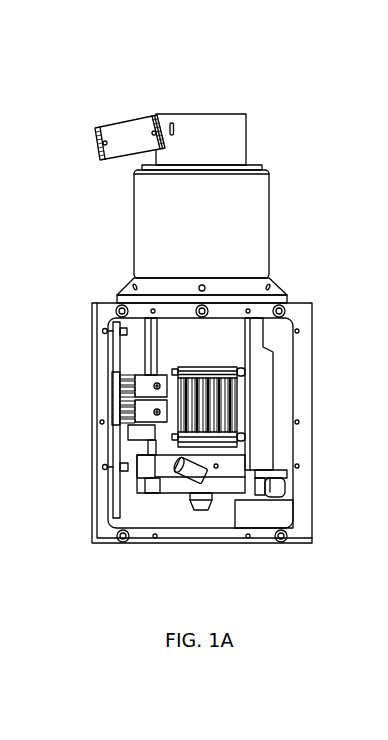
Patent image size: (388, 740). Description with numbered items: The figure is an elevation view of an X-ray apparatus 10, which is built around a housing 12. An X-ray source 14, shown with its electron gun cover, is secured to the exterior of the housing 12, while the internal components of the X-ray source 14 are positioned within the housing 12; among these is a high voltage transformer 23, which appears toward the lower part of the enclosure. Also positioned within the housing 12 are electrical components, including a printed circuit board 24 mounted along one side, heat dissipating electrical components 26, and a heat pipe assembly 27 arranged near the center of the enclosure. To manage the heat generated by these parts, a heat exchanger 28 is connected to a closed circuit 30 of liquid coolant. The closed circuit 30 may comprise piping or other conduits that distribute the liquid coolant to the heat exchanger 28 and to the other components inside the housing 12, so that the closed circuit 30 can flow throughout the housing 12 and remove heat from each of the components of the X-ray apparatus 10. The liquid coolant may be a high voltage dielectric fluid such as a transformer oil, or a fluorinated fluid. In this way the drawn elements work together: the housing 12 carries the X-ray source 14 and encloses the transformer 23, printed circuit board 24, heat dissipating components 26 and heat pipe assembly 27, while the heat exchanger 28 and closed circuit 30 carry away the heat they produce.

The X-ray apparatus 10 is at (271, 71).
The housing 12 is at (295, 303).
The X-ray source 14 is at (104, 128).
The high voltage transformer 23 is at (288, 517).
The printed circuit board 24 is at (118, 495).
The heat dissipating electrical components 26 is at (150, 380).
The heat pipe assembly 27 is at (193, 410).
The heat exchanger 28 is at (287, 392).
The closed circuit 30 is at (288, 482).